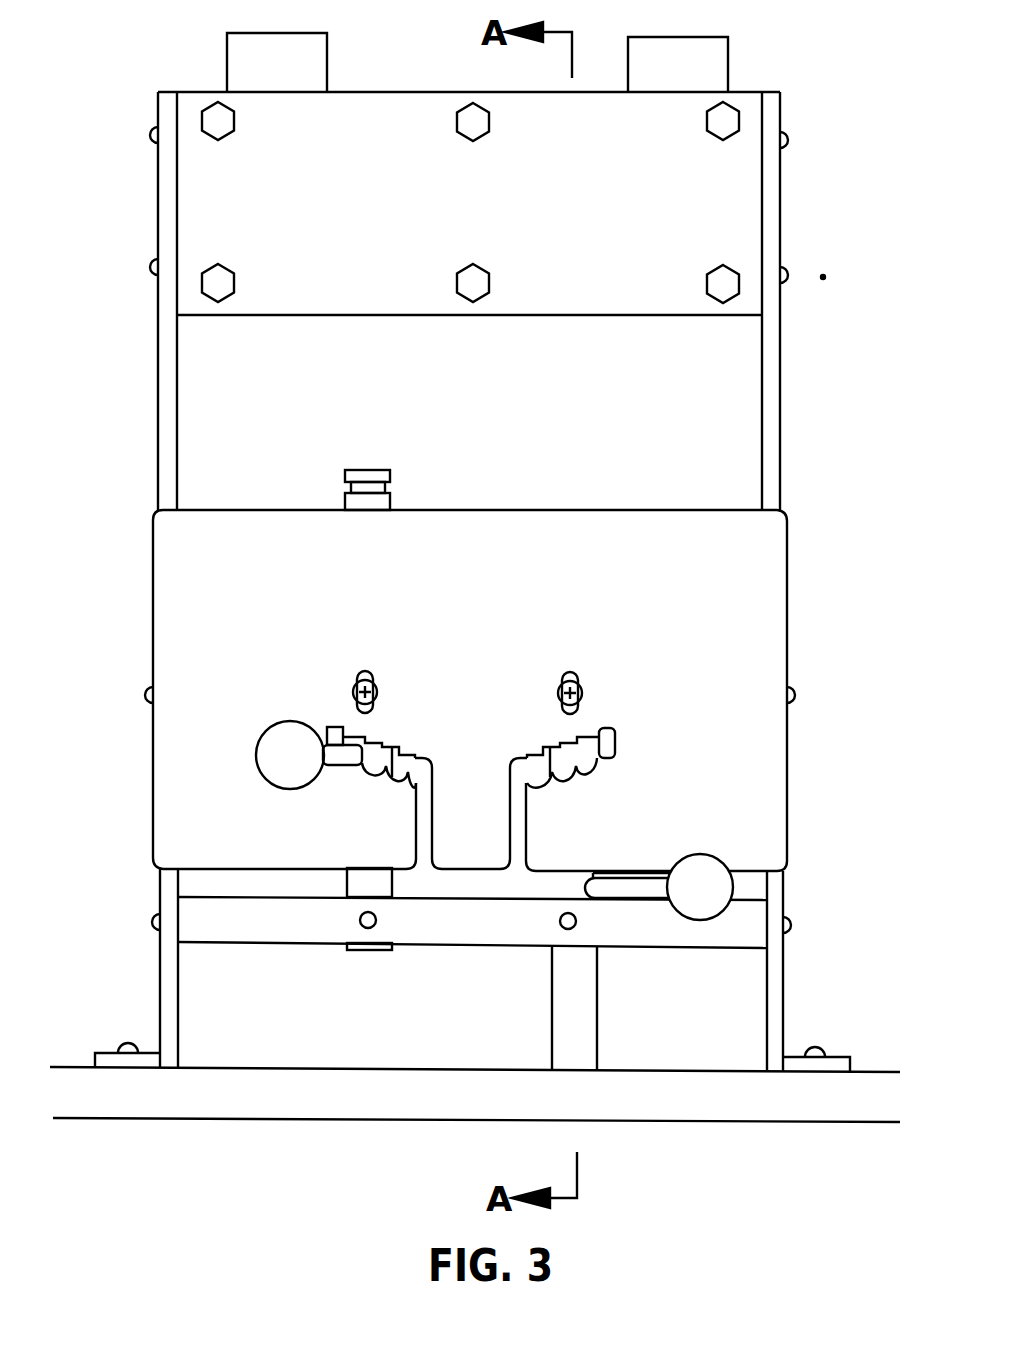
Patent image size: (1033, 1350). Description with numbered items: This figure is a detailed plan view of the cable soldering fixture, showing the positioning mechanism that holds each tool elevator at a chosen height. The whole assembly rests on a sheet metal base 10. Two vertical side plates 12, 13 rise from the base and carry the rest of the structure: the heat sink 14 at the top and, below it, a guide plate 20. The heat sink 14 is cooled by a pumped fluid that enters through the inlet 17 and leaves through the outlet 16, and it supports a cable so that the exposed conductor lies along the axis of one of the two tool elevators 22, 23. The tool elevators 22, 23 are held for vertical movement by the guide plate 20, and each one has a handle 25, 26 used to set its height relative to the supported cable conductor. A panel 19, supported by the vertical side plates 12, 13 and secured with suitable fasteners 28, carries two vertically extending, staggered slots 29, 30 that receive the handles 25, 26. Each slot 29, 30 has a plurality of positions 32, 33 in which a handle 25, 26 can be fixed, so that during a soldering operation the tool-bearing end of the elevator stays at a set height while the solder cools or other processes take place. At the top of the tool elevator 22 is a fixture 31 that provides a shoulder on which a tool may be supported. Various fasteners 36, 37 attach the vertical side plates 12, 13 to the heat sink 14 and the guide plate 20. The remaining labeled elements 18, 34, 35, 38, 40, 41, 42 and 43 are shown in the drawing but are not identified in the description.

The sheet metal base 10 is at (150, 1093).
The vertical side plate 12 is at (782, 478).
The vertical side plate 13 is at (157, 428).
The heat sink 14 is at (603, 242).
The outlet 16 is at (327, 36).
The inlet 17 is at (728, 40).
The hex nuts 18 is at (725, 265).
The panel 19 is at (707, 711).
The guide plate 20 is at (755, 935).
The tool elevator 22 is at (582, 1050).
The tool elevator 23 is at (385, 887).
The handle 25 is at (725, 855).
The handle 26 is at (262, 780).
The fasteners 28 is at (378, 684).
The slot 29 is at (548, 738).
The slot 30 is at (398, 740).
The fixture 31 is at (390, 476).
The positions 32 is at (570, 790).
The positions 33 is at (385, 790).
The left foot bump 34 is at (128, 1043).
The left lower bump 35 is at (153, 922).
The fasteners 36 is at (790, 918).
The fasteners 37 is at (793, 695).
The bumps 38 is at (145, 695).
The right lower bump 40 is at (787, 277).
The right upper bump 41 is at (787, 140).
The left upper bump 42 is at (150, 135).
The left lower bump 43 is at (150, 268).